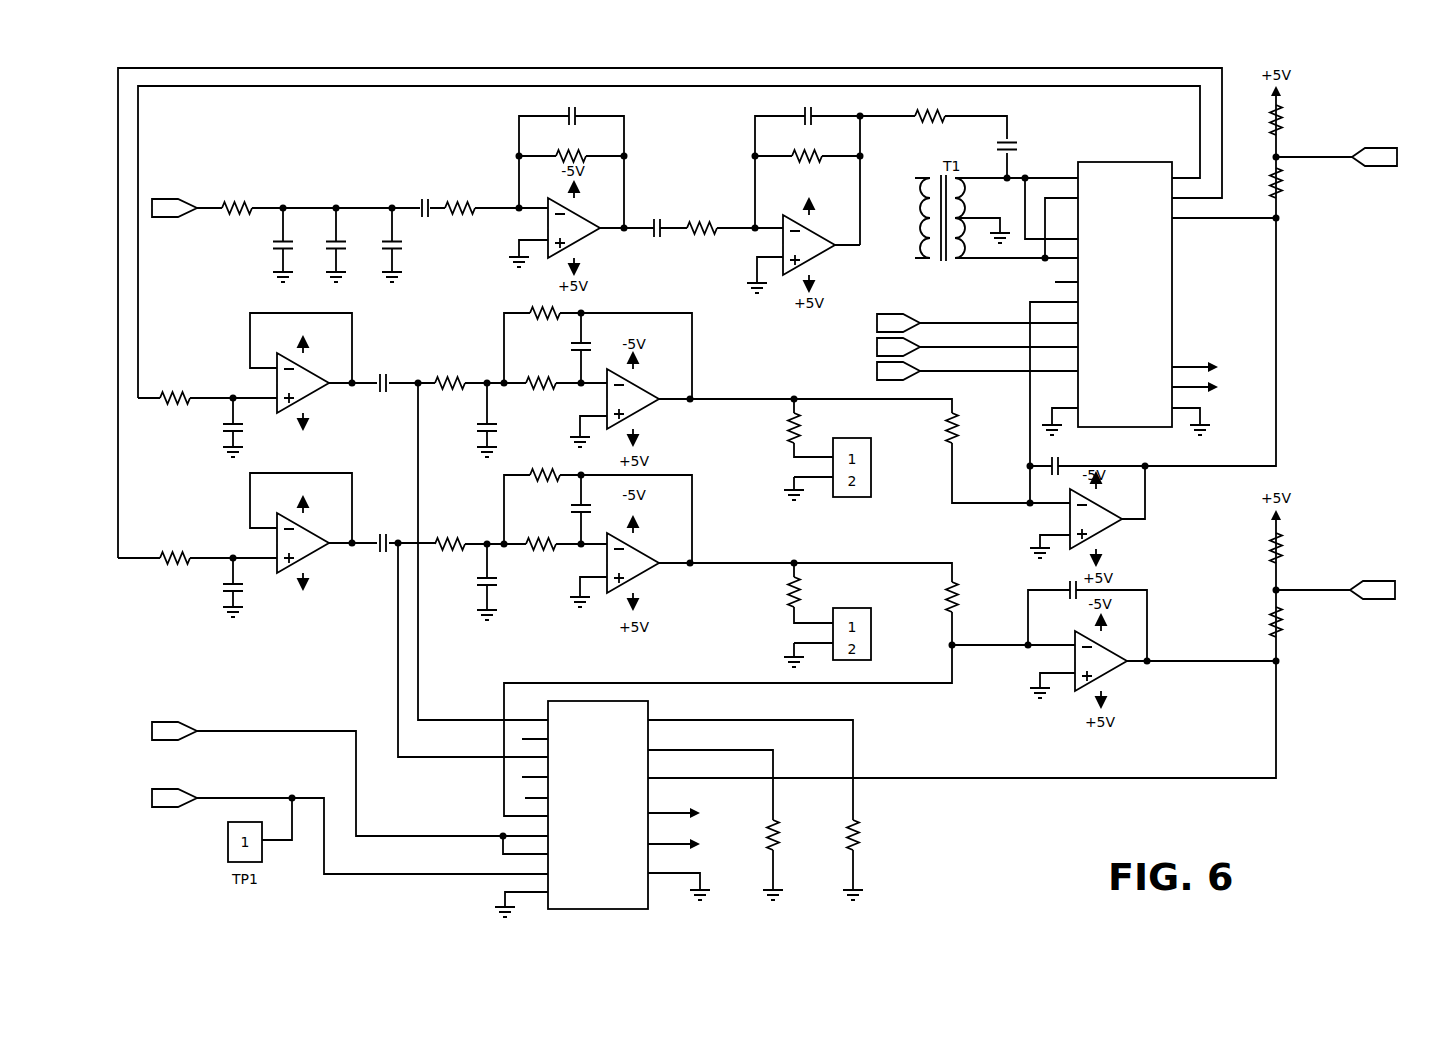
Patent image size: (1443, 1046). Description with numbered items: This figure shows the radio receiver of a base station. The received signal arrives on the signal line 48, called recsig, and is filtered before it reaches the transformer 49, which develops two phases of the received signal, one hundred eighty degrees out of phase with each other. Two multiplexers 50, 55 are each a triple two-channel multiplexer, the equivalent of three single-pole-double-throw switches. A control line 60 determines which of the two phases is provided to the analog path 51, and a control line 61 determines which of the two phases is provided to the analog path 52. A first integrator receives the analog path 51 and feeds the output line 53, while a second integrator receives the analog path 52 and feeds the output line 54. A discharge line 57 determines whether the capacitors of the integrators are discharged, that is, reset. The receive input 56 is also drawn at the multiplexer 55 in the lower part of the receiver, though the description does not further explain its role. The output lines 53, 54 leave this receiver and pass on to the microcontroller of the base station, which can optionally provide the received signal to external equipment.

The signal line 48 is at (177, 216).
The transformer 49 is at (932, 171).
The multiplexer 50 is at (1120, 160).
The analog path 51 is at (240, 351).
The analog path 52 is at (236, 506).
The output line 53 is at (1378, 167).
The output line 54 is at (1378, 601).
The multiplexer 55 is at (653, 710).
The RECEIVE control input 56 is at (152, 722).
The discharge line 57 is at (875, 371).
The control line 60 is at (880, 313).
The control line 61 is at (874, 349).